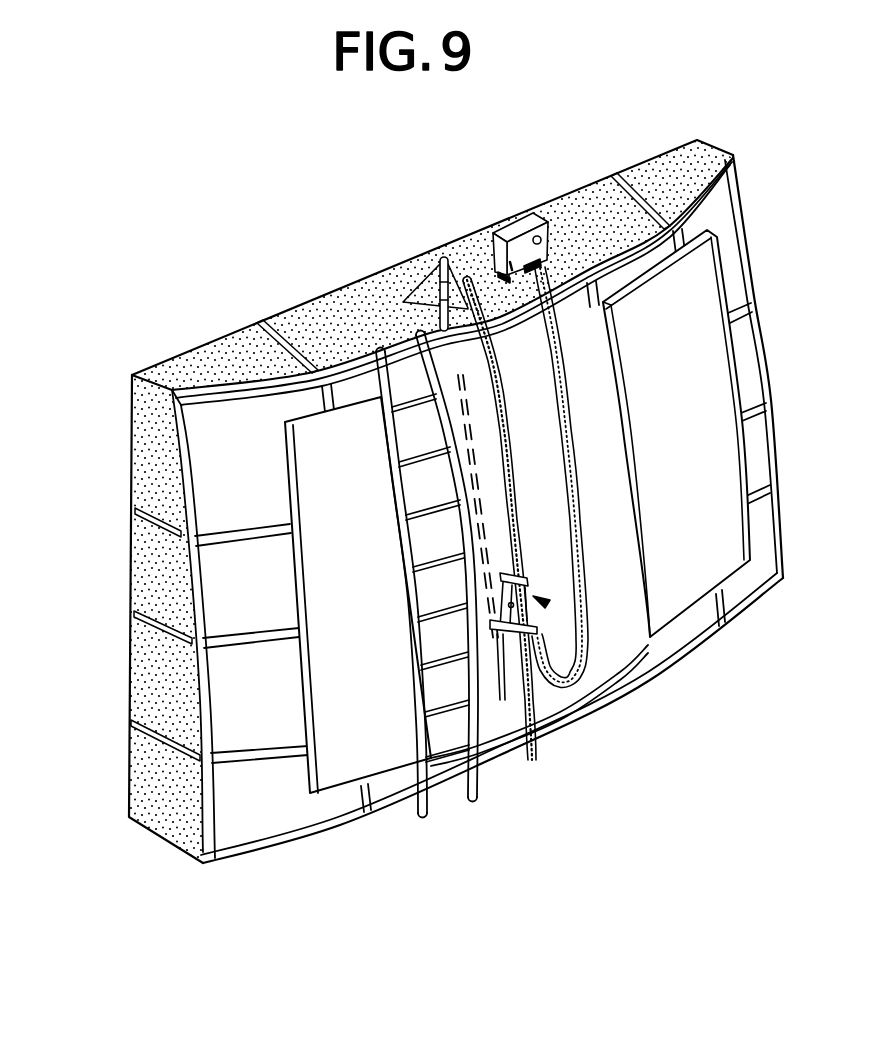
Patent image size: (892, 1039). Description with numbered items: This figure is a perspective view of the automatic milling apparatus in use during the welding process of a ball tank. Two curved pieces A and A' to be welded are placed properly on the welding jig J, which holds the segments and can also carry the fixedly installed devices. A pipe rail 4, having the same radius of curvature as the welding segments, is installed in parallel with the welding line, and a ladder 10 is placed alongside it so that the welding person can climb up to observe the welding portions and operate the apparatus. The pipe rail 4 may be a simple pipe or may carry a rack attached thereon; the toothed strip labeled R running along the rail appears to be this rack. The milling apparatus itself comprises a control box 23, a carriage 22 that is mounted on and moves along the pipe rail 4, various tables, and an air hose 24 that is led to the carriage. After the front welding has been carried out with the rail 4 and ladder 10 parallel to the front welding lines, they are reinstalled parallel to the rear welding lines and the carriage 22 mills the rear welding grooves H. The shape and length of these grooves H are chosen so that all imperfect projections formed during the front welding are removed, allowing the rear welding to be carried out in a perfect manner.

The welding jig J is at (217, 580).
The piece to be welded A is at (358, 637).
The piece to be welded A' is at (674, 497).
The ladder 10 is at (443, 777).
The pipe rail 4 is at (415, 318).
The control box 23 is at (528, 224).
The carriage 22 is at (570, 682).
The rack strip R is at (532, 720).
The rear welding grooves H is at (498, 697).
The air hose 24 is at (620, 637).